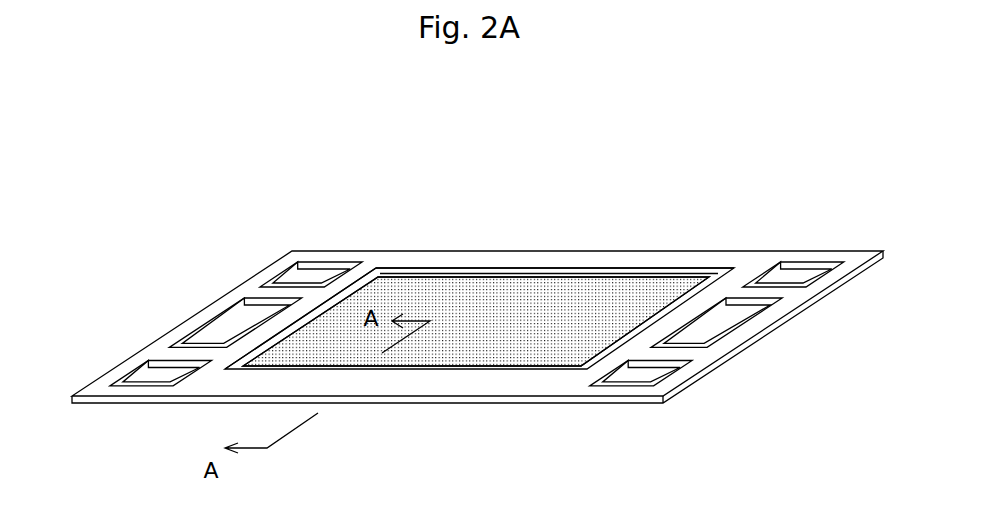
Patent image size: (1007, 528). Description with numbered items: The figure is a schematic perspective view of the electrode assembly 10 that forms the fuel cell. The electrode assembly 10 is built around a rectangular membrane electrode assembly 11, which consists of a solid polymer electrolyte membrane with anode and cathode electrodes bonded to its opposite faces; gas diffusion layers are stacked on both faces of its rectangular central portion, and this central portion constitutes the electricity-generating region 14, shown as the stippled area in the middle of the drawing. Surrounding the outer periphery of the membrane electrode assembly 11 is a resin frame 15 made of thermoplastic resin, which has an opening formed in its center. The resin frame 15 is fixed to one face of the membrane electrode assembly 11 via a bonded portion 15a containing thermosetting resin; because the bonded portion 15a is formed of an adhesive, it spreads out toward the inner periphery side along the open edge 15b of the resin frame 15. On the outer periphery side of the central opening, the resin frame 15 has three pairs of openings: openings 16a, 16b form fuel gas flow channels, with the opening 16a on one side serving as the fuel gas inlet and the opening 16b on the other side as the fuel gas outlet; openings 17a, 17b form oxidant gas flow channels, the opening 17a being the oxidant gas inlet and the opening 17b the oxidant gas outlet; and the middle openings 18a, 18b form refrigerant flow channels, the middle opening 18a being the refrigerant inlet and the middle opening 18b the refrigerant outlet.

The electrode assembly 10 is at (269, 237).
The membrane electrode assembly 11 is at (413, 297).
The electricity-generating region 14 is at (502, 347).
The resin frame 15 is at (668, 260).
The bonded portion 15a is at (477, 275).
The open edge 15b is at (373, 268).
The opening 16a is at (792, 273).
The opening 16b is at (158, 374).
The opening 17a is at (650, 375).
The opening 17b is at (308, 275).
The middle opening 18a is at (713, 328).
The middle opening 18b is at (240, 322).